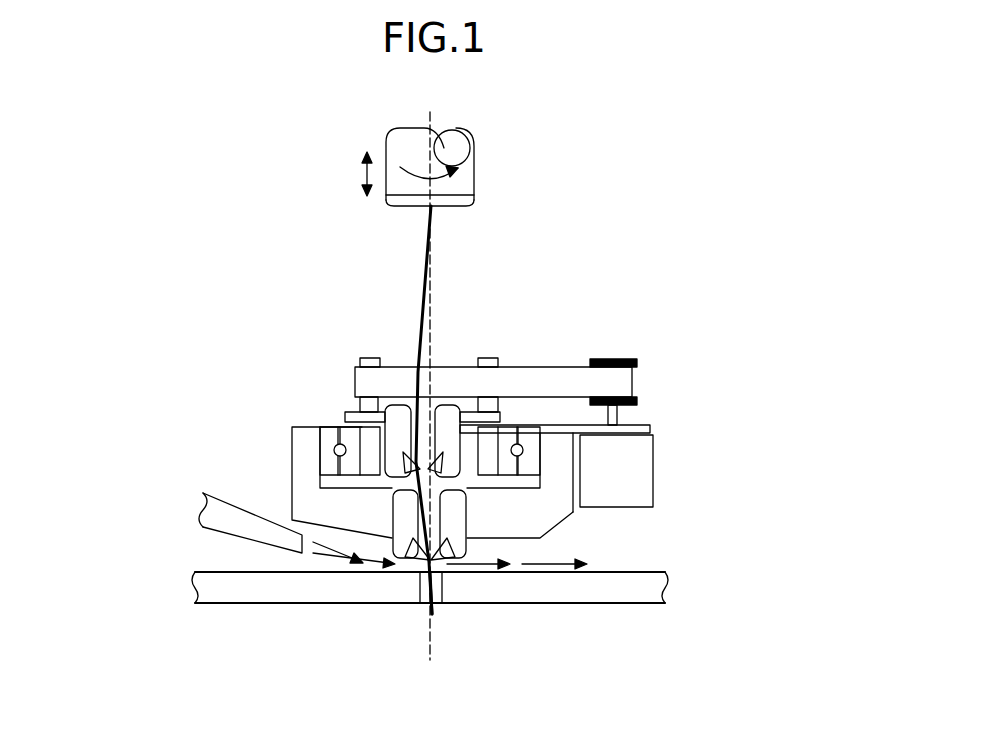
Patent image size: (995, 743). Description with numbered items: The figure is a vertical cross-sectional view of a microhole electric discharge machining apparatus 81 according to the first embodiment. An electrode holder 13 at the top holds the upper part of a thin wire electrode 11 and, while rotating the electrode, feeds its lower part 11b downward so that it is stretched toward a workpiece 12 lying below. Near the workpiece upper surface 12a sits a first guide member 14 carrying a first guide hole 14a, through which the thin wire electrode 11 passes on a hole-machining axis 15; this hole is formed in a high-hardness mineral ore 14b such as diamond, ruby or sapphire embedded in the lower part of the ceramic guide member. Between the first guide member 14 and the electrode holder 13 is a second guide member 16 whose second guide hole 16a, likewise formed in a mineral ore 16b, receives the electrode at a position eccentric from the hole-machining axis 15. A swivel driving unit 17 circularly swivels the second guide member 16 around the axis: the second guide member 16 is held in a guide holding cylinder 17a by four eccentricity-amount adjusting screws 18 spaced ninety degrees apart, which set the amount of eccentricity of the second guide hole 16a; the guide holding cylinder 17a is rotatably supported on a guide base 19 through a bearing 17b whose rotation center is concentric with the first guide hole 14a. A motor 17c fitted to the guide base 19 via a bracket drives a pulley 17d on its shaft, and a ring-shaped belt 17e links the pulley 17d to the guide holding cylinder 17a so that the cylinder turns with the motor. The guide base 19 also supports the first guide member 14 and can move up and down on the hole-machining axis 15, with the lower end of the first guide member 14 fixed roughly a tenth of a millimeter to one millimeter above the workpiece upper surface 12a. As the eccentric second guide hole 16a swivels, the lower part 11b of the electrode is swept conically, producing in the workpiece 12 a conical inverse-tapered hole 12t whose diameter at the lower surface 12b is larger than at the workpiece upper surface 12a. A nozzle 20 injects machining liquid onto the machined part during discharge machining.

The microhole electric discharge machining apparatus 81 is at (633, 154).
The thin wire electrode 11 is at (421, 282).
The lower part of the thin wire electrode 11b is at (438, 612).
The workpiece 12 is at (365, 631).
The workpiece upper surface 12a is at (217, 571).
The lower surface of the workpiece 12b is at (295, 605).
The conical inverse-tapered hole 12t is at (422, 618).
The electrode holder 13 is at (476, 169).
The first guide member 14 is at (462, 550).
The first guide hole 14a is at (414, 576).
The high-hardness mineral ore 14b is at (447, 574).
The hole-machining axis 15 is at (430, 634).
The second guide member 16 is at (335, 411).
The second guide hole 16a is at (410, 482).
The high-hardness mineral ore 16b is at (428, 468).
The swivel driving unit 17 is at (529, 328).
The guide holding cylinder 17a is at (491, 358).
The bearing 17b is at (528, 430).
The motor 17c is at (656, 472).
The pulley 17d is at (619, 332).
The ring-shaped belt 17e is at (578, 366).
The eccentricity-amount adjusting screws 18 is at (465, 400).
The guide base 19 is at (300, 427).
The nozzle 20 is at (244, 522).